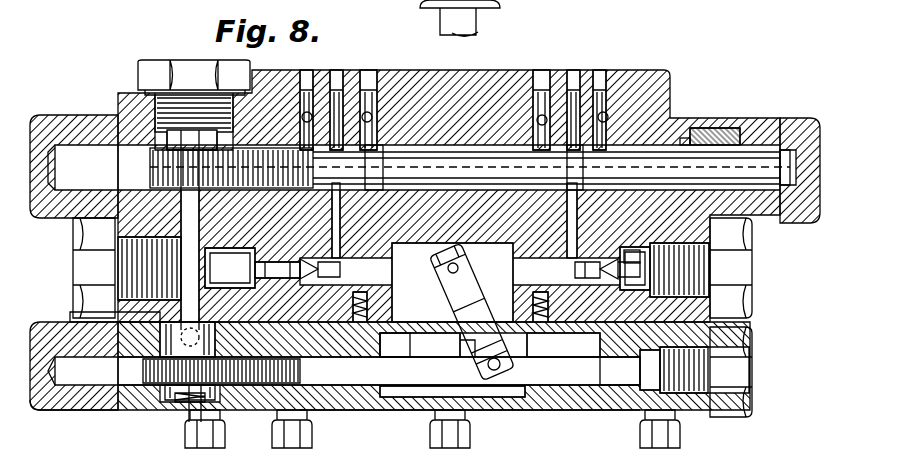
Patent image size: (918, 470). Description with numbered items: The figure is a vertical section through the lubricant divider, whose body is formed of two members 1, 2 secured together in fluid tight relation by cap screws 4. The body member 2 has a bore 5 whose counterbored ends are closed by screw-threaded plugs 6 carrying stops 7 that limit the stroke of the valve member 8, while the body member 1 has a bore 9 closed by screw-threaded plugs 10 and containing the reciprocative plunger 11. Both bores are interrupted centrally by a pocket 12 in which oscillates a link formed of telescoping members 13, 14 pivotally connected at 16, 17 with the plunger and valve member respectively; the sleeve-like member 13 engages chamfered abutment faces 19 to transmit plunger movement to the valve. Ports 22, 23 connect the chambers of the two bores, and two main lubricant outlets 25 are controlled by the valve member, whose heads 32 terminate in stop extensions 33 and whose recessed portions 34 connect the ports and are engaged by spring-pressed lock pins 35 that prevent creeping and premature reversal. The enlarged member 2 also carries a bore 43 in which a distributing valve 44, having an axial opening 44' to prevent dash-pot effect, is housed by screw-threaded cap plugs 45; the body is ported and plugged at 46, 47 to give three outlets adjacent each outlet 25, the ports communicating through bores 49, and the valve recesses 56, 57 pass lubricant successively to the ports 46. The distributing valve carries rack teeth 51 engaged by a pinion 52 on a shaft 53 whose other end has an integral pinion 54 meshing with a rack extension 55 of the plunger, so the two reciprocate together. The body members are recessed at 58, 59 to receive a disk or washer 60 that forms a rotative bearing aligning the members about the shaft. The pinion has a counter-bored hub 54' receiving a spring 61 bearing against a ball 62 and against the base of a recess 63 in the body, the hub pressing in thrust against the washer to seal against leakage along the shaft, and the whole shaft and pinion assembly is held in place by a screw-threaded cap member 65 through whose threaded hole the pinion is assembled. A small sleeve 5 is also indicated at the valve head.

The body member 1 is at (332, 423).
The body member 2 is at (668, 72).
The cap screws 4 is at (217, 443).
The bore 5 is at (632, 256).
The screw-threaded plugs 6 is at (83, 253).
The stops 7 is at (257, 268).
The valve member 8 is at (497, 277).
The bore 9 is at (607, 390).
The screw-threaded plugs 10 is at (53, 413).
The plunger 11 is at (573, 380).
The pocket 12 is at (410, 393).
The telescoping member 13 is at (450, 312).
The telescoping member 14 is at (463, 350).
The pivotal connection 16 is at (487, 370).
The pivotal connection 17 is at (440, 270).
The abutment faces 19 is at (400, 327).
The ports 22 is at (337, 333).
The port 23 is at (612, 350).
The main lubricant outlets 25 is at (333, 193).
The heads 32 is at (333, 268).
The stop extensions 33 is at (643, 266).
The recessed portions 34 is at (340, 268).
The lock pins 35 is at (353, 293).
The bore 43 is at (462, 150).
The distributing valve 44 is at (710, 120).
The axial opening 44' is at (750, 110).
The screw-threaded cap plugs 45 is at (80, 123).
The ports 46 is at (305, 105).
The plugs 47 is at (337, 100).
The bores 49 is at (300, 112).
The rack teeth 51 is at (152, 160).
The pinion 52 is at (163, 170).
The shaft 53 is at (185, 273).
The pinion 54 is at (156, 390).
The counter-bored hub 54' is at (167, 398).
The rack extension 55 is at (263, 372).
The recess 56 is at (417, 185).
The recesses 57 is at (385, 165).
The recess 58 is at (157, 315).
The recess 59 is at (117, 352).
The disk or washer 60 is at (303, 350).
The spring 61 is at (195, 390).
The ball 62 is at (157, 355).
The recess 63 is at (197, 343).
The screw-threaded cap member 65 is at (185, 60).